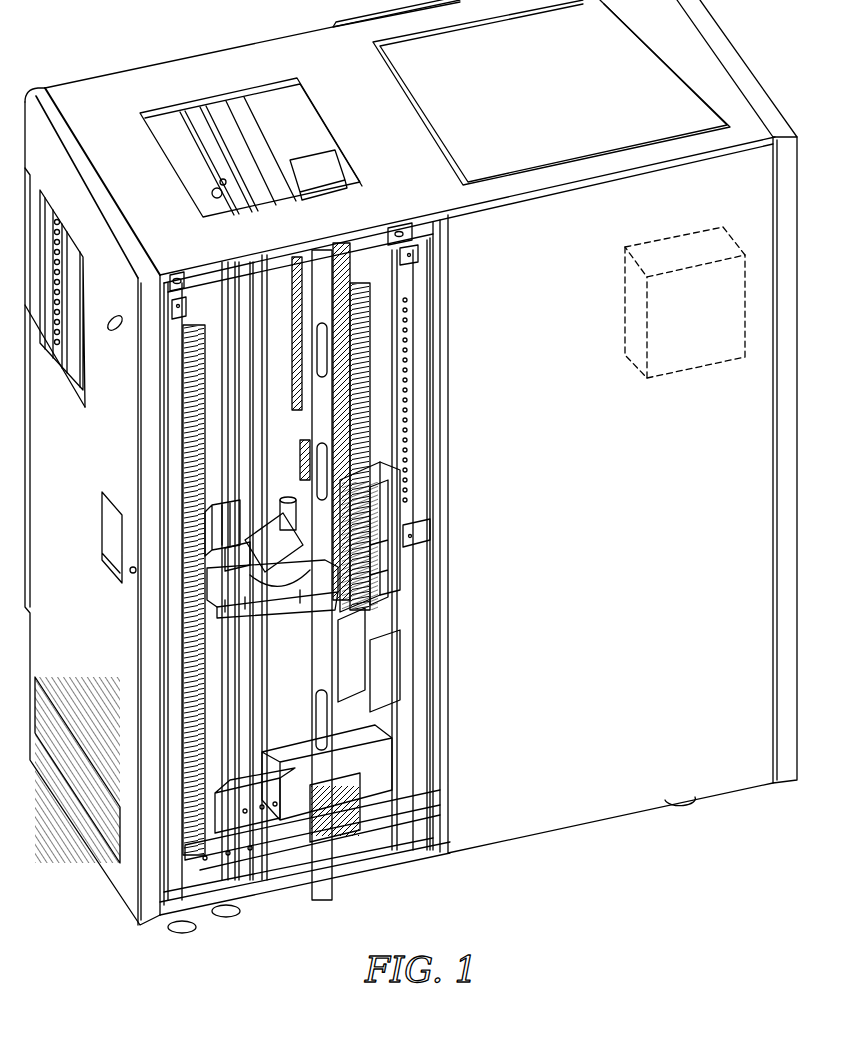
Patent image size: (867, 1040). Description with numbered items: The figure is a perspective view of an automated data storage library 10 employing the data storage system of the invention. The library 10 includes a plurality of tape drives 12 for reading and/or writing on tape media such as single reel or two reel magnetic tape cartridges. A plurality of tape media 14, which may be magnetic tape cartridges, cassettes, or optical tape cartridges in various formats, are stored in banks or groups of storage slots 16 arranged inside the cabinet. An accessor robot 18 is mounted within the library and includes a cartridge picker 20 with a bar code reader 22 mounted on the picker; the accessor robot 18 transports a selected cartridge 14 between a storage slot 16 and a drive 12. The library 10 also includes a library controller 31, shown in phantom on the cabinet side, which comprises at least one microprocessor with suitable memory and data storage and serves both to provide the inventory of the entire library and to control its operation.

The automated data storage library 10 is at (207, 68).
The tape drives 12 is at (383, 590).
The tape media 14 is at (182, 394).
The storage slots 16 is at (208, 415).
The accessor robot 18 is at (247, 828).
The cartridge picker 20 is at (335, 597).
The bar code reader 22 is at (193, 508).
The library controller 31 is at (616, 299).